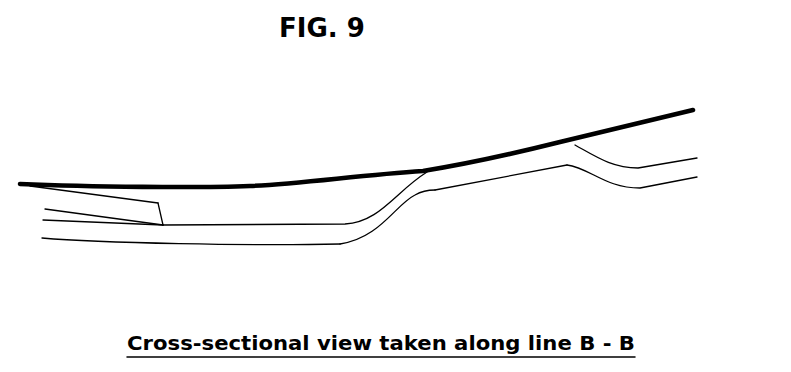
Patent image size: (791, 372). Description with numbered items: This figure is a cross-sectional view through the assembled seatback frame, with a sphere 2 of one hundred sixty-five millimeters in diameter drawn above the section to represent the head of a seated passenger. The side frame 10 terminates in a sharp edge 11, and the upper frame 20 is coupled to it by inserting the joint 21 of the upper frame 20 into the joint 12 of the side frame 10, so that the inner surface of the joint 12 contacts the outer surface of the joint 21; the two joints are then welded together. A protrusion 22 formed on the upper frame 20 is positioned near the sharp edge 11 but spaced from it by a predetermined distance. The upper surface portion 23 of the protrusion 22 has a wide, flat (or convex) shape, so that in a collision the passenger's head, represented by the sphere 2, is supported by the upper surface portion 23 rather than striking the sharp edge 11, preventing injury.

The sphere 2 is at (280, 185).
The side frame 10 is at (65, 212).
The sharp edge 11 is at (159, 202).
The joint 12 is at (130, 213).
The upper frame 20 is at (392, 232).
The joint 21 is at (148, 241).
The protrusion 22 is at (607, 162).
The upper surface portion 23 is at (490, 172).